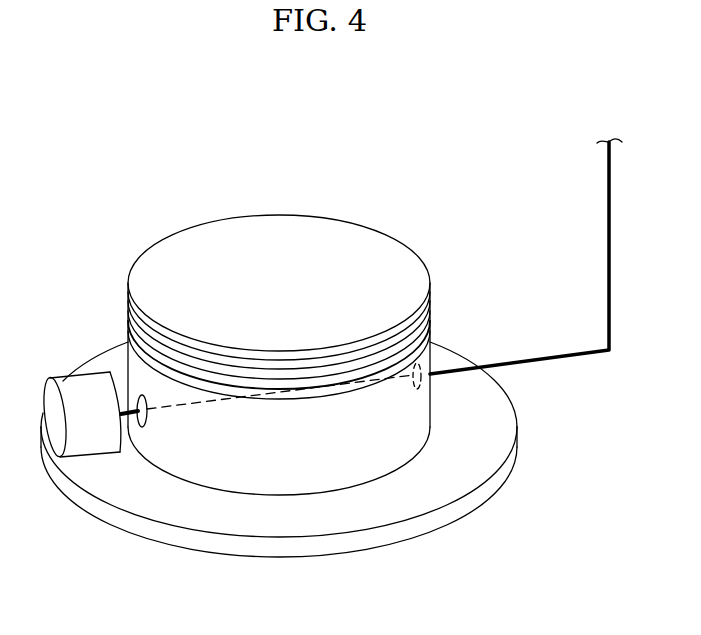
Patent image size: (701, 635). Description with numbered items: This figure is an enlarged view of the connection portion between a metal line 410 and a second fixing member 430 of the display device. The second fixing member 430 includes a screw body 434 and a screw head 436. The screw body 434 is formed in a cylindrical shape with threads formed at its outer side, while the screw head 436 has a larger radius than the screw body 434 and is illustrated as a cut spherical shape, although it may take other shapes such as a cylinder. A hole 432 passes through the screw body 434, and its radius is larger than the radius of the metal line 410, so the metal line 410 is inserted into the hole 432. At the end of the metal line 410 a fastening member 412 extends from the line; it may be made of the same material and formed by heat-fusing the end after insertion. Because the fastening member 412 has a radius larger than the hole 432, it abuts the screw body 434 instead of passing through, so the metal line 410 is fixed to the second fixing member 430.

The metal line 410 is at (553, 357).
The fastening member 412 is at (83, 381).
The second fixing member 430 is at (566, 482).
The hole 432 is at (128, 396).
The screw body 434 is at (183, 445).
The screw head 436 is at (505, 413).